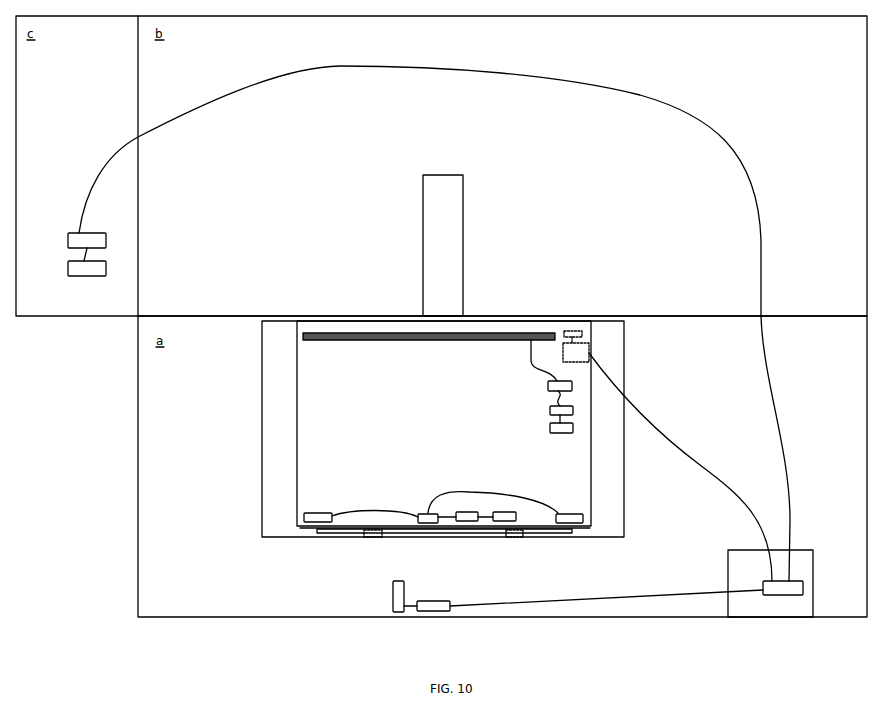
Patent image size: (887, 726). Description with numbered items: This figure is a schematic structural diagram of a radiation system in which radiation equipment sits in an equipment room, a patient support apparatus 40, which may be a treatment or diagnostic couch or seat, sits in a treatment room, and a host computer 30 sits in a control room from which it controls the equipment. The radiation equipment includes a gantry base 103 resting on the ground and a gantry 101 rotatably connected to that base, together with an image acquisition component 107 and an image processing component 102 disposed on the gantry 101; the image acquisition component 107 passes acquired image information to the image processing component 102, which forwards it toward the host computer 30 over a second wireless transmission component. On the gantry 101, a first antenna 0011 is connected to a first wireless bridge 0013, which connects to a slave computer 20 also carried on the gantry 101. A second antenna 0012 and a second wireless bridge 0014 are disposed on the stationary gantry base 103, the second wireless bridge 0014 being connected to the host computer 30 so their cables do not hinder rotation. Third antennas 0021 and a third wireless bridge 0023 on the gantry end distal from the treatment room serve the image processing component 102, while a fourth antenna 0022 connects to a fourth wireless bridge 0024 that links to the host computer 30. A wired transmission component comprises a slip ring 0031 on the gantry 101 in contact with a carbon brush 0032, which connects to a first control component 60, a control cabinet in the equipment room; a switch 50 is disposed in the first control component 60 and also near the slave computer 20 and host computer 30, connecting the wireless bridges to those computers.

The switch 50 is at (62, 240).
The host computer 30 is at (78, 283).
The patient support apparatus 40 is at (470, 240).
The first control component 60 is at (821, 557).
The slave computer 20 is at (543, 428).
The gantry 101 is at (291, 422).
The gantry base 103 is at (256, 445).
The image processing component 102 is at (463, 505).
The image acquisition component 107 is at (503, 505).
The first antenna 0011 is at (495, 327).
The second antenna 0012 is at (571, 324).
The first wireless bridge 0013 is at (541, 387).
The second wireless bridge 0014 is at (596, 347).
The third antenna 0021 is at (313, 506).
The fourth antenna 0022 is at (386, 607).
The third wireless bridge 0023 is at (421, 507).
The fourth wireless bridge 0024 is at (435, 595).
The slip ring 0031 is at (577, 535).
The carbon brush 0032 is at (372, 544).